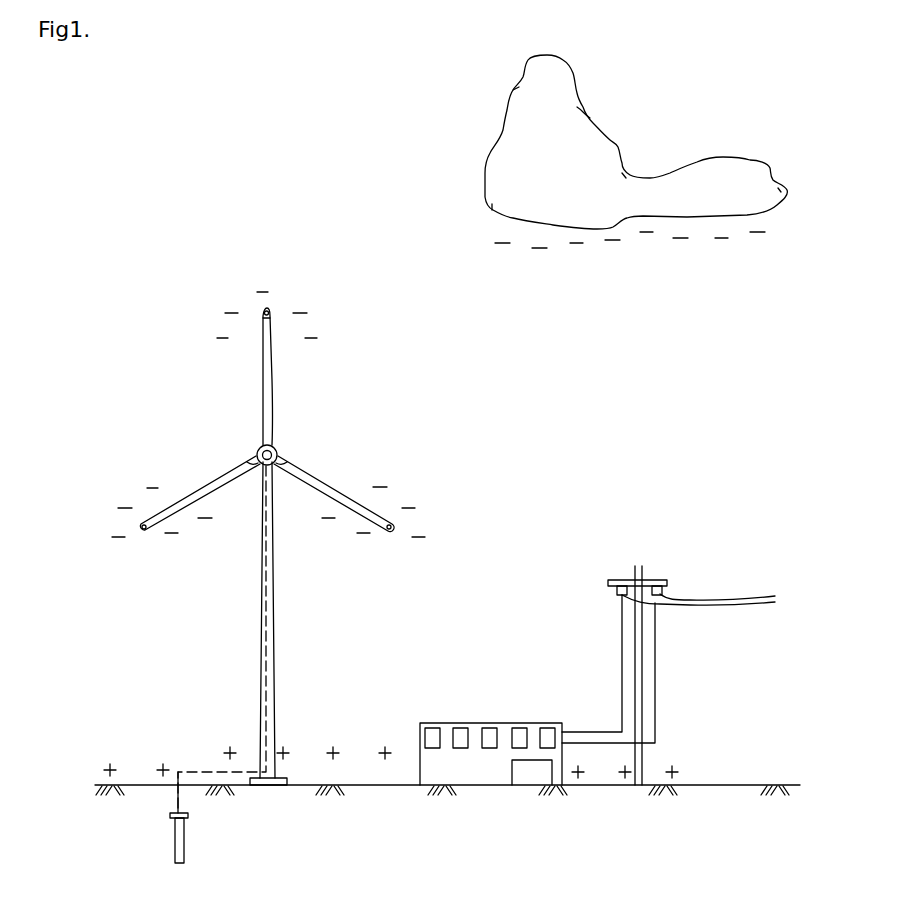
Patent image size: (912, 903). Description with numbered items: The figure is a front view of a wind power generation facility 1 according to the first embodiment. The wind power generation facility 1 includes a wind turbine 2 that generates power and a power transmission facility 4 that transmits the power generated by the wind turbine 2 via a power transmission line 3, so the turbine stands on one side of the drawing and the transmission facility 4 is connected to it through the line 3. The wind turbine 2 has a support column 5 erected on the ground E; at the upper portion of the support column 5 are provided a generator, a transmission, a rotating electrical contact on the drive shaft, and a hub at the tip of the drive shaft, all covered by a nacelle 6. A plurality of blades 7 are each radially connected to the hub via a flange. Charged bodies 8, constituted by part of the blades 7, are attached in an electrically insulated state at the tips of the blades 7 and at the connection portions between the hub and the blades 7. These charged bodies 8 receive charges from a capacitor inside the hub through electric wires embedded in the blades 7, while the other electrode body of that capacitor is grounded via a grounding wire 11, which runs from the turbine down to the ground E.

The wind power generation facility 1 is at (513, 550).
The wind turbine 2 is at (235, 412).
The power transmission line 3 is at (622, 671).
The power transmission facility 4 is at (450, 723).
The support column 5 is at (275, 640).
The nacelle 6 is at (277, 447).
The blades 7 is at (275, 380).
The charged bodies 8 is at (270, 310).
The grounding wire 11 is at (262, 617).
The ground E is at (133, 785).